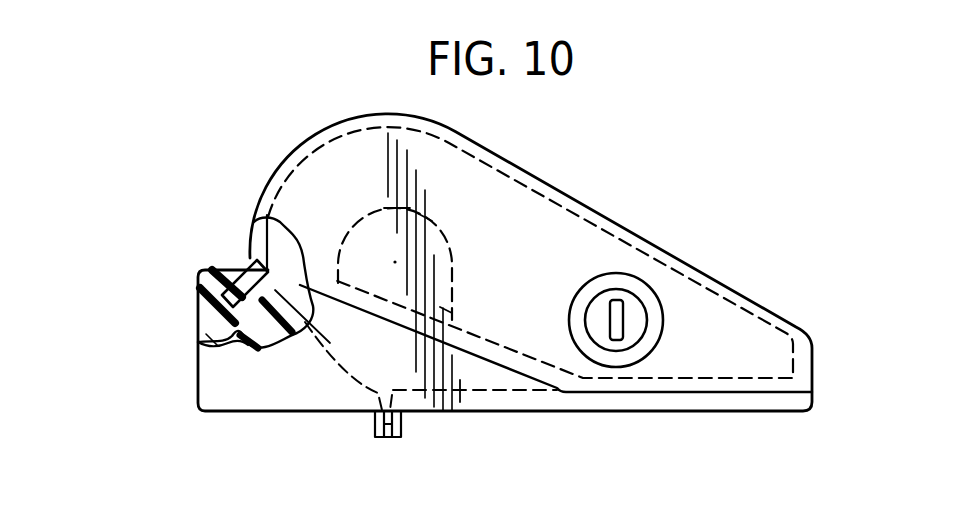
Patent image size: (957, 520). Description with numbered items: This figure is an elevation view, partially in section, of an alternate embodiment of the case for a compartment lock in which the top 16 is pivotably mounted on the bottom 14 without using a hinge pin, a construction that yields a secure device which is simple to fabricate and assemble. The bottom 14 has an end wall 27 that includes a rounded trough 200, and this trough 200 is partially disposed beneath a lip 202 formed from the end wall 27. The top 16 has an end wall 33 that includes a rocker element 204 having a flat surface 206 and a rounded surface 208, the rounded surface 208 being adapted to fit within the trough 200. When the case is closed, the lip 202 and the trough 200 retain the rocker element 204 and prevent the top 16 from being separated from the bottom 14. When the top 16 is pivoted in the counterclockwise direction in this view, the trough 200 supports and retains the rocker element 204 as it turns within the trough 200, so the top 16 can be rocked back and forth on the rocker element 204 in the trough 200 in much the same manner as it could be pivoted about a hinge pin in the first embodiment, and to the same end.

The bottom 14 is at (188, 398).
The top 16 is at (282, 151).
The end wall 27 is at (212, 344).
The end wall 33 is at (258, 232).
The rounded trough 200 is at (262, 300).
The lip 202 is at (220, 282).
The rocker element 204 is at (290, 302).
The flat surface 206 is at (226, 288).
The rounded surface 208 is at (250, 262).